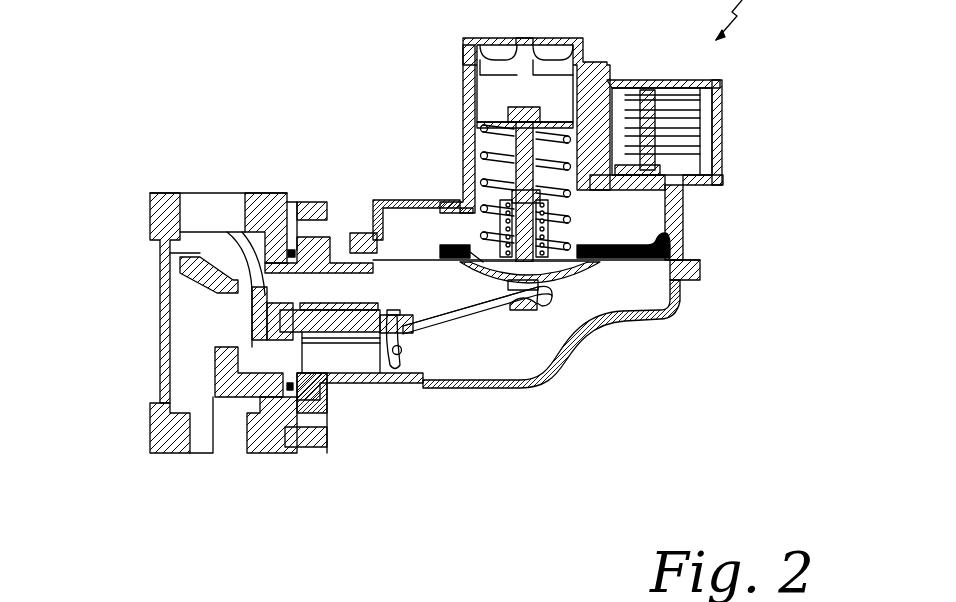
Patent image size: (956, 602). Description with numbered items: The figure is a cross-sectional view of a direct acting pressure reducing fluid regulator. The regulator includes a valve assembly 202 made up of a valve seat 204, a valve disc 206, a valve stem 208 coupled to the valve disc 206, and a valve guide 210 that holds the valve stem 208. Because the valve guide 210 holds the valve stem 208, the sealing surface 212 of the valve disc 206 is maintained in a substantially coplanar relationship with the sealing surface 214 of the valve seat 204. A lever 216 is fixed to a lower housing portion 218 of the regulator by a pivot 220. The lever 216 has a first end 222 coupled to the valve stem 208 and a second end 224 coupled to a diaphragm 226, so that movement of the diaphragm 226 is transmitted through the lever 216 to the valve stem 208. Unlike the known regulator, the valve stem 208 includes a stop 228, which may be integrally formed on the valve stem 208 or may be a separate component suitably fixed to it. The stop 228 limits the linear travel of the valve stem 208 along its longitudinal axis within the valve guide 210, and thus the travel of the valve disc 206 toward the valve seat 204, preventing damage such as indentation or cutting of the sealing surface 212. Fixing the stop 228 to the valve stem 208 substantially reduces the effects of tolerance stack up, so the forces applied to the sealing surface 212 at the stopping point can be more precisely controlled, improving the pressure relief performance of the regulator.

The valve assembly 202 is at (317, 358).
The valve seat 204 is at (258, 318).
The valve disc 206 is at (274, 453).
The valve stem 208 is at (340, 323).
The valve guide 210 is at (335, 270).
The sealing surface 212 is at (215, 453).
The sealing surface 214 is at (157, 251).
The lever 216 is at (460, 328).
The lower housing portion 218 is at (575, 347).
The pivot 220 is at (460, 332).
The first end 222 is at (398, 356).
The second end 224 is at (543, 300).
The diaphragm 226 is at (633, 257).
The stop 228 is at (395, 310).